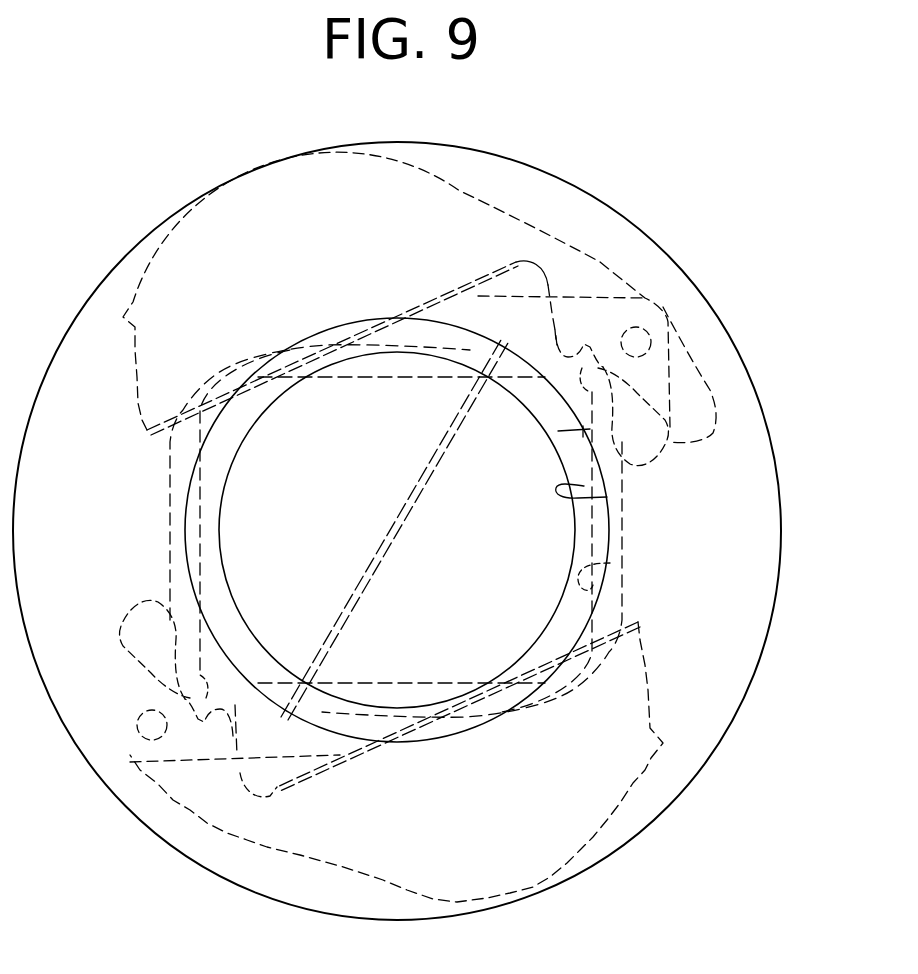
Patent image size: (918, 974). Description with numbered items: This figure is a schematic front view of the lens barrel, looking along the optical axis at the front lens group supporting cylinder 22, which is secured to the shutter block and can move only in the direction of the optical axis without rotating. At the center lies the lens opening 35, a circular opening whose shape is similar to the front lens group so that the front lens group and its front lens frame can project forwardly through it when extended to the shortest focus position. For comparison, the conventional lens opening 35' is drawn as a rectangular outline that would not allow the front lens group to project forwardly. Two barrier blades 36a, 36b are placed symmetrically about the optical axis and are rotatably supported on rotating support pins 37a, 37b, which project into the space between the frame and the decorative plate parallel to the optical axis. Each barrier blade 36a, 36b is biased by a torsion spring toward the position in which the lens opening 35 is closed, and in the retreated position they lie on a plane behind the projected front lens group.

The front lens group supporting cylinder 22 is at (548, 172).
The lens opening 35 is at (467, 530).
The conventional lens opening 35' is at (502, 531).
The barrier blade 36a is at (285, 185).
The barrier blade 36b is at (568, 813).
The rotating support pin 37a is at (637, 341).
The rotating support pin 37b is at (143, 727).